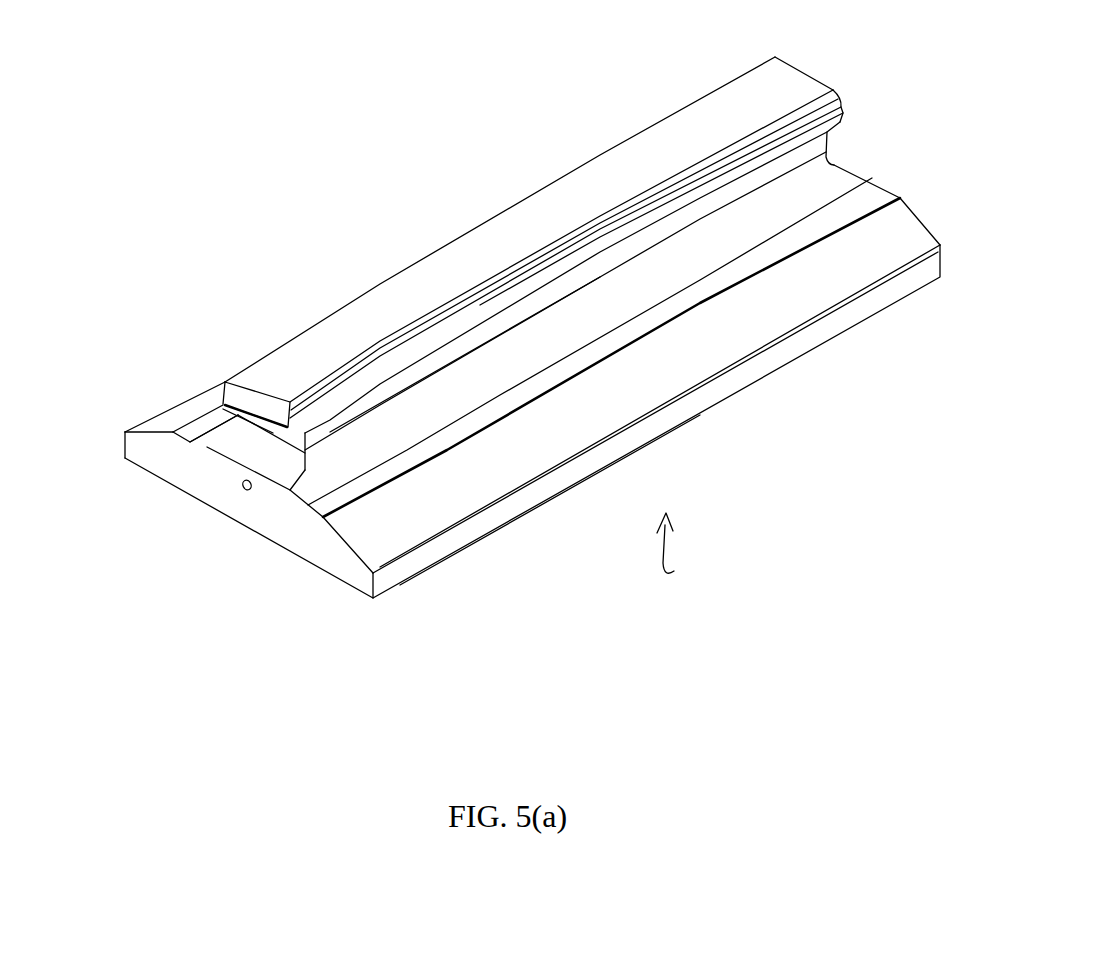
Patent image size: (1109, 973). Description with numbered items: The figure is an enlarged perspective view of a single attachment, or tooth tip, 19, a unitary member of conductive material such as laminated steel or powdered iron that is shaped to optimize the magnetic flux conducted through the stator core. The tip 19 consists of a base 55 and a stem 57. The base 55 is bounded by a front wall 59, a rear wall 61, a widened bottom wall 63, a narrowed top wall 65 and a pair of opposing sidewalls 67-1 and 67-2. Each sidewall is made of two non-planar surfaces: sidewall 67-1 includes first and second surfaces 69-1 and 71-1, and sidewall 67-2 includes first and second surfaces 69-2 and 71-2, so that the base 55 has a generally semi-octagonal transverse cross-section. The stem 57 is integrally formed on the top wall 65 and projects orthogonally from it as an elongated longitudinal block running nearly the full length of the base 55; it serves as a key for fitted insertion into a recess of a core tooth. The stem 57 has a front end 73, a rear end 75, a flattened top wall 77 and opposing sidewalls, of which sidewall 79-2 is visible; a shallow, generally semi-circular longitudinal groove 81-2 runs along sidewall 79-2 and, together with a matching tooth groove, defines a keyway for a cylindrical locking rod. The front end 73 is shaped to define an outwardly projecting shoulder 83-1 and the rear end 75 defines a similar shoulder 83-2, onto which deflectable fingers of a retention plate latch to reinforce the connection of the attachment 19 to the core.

The attachment 19 is at (703, 597).
The base 55 is at (805, 342).
The stem 57 is at (447, 250).
The front wall 59 is at (195, 477).
The rear wall 61 is at (908, 203).
The widened bottom wall 63 is at (240, 523).
The narrowed top wall 65 is at (203, 418).
The sidewall 67-1 is at (126, 432).
The sidewall 67-2 is at (380, 573).
The first surface 69-1 is at (124, 448).
The first surface 69-2 is at (460, 543).
The second surface 71-1 is at (160, 418).
The second surface 71-2 is at (352, 545).
The front end 73 is at (242, 378).
The rear end 75 is at (826, 84).
The flattened top wall 77 is at (575, 186).
The sidewall 79-2 is at (505, 330).
The longitudinal groove 81-2 is at (622, 228).
The front shoulder 83-1 is at (262, 422).
The rear shoulder 83-2 is at (843, 133).